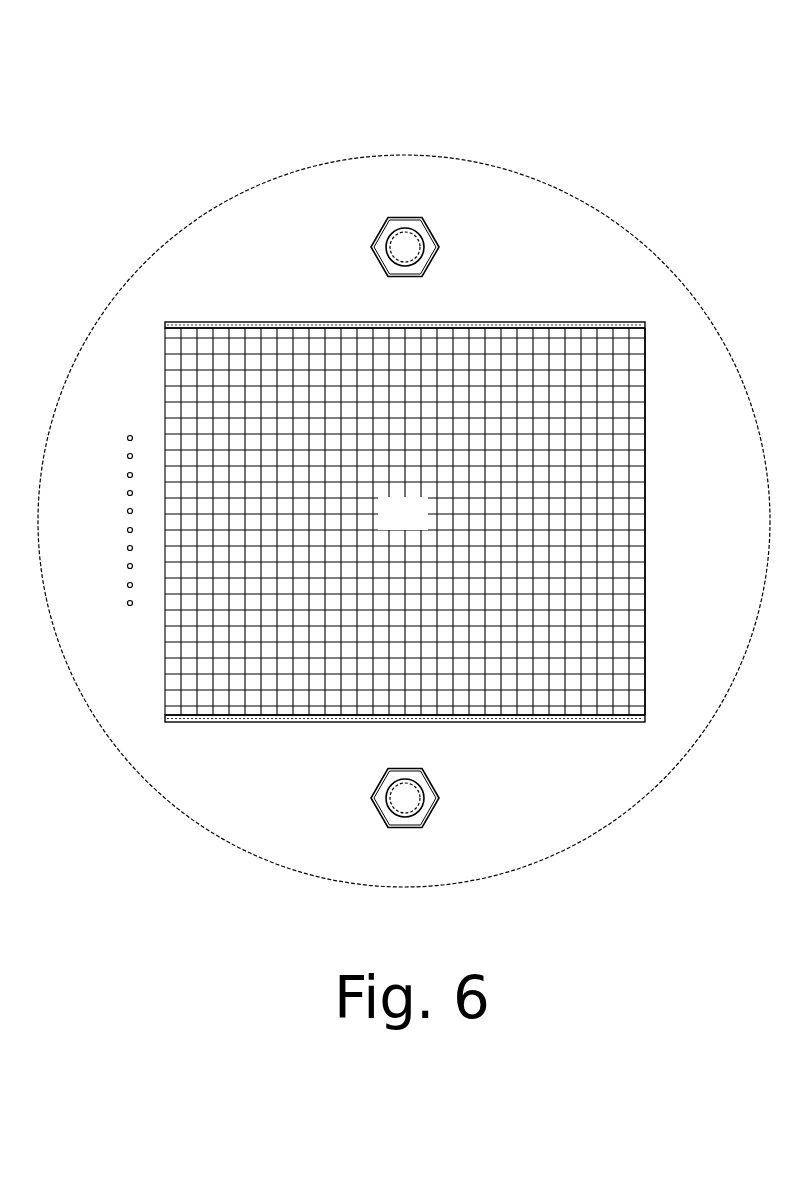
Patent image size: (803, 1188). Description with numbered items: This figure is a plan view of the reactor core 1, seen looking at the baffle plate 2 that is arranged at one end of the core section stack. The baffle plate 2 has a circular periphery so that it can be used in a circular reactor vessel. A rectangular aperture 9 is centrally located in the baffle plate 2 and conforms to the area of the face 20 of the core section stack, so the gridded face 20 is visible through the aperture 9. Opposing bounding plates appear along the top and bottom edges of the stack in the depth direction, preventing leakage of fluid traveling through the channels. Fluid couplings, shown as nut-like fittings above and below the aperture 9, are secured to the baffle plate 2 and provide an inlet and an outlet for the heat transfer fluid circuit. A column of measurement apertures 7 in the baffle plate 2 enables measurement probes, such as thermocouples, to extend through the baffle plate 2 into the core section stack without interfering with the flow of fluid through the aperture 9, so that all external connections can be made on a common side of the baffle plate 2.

The reactor core 1 is at (640, 117).
The baffle plate 2 is at (208, 240).
The measurement apertures 7 is at (122, 610).
The rectangular aperture 9 is at (645, 493).
The face 20 is at (412, 526).